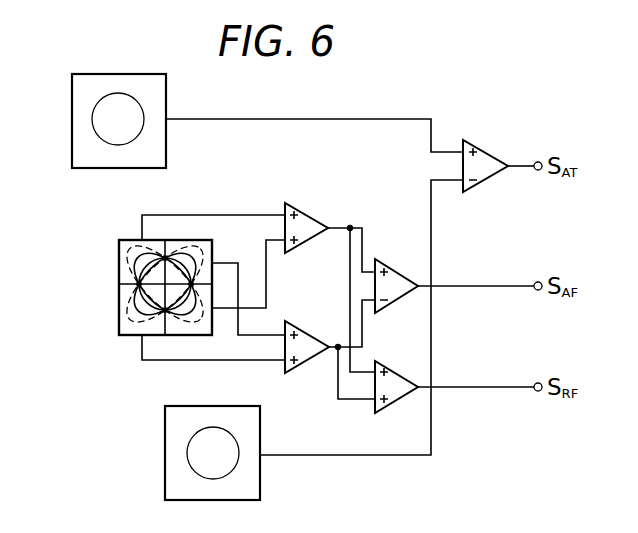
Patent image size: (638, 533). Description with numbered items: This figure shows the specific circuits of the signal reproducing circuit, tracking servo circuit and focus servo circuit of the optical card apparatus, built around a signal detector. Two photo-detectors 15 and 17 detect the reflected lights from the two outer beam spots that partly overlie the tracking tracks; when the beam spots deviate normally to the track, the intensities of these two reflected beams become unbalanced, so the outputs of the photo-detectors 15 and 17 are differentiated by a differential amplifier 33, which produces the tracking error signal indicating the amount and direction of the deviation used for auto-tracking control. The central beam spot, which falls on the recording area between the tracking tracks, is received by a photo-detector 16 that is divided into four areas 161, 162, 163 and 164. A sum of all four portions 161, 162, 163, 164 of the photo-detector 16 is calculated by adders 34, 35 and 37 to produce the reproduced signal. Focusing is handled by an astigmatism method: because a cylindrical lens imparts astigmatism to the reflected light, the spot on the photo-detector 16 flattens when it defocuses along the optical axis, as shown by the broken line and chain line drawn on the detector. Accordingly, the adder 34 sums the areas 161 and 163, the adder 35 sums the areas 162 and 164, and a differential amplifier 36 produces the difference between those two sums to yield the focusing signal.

The photo-detector 15 is at (72, 116).
The photo-detector 16 is at (153, 309).
The divided area of photo-detector 161 is at (119, 250).
The divided area of photo-detector 162 is at (212, 250).
The divided area of photo-detector 163 is at (195, 335).
The divided area of photo-detector 164 is at (119, 310).
The photo-detector 17 is at (165, 450).
The differential amplifier 33 is at (480, 148).
The adder 34 is at (299, 209).
The adder 35 is at (299, 326).
The differential amplifier 36 is at (387, 265).
The adder 37 is at (389, 409).